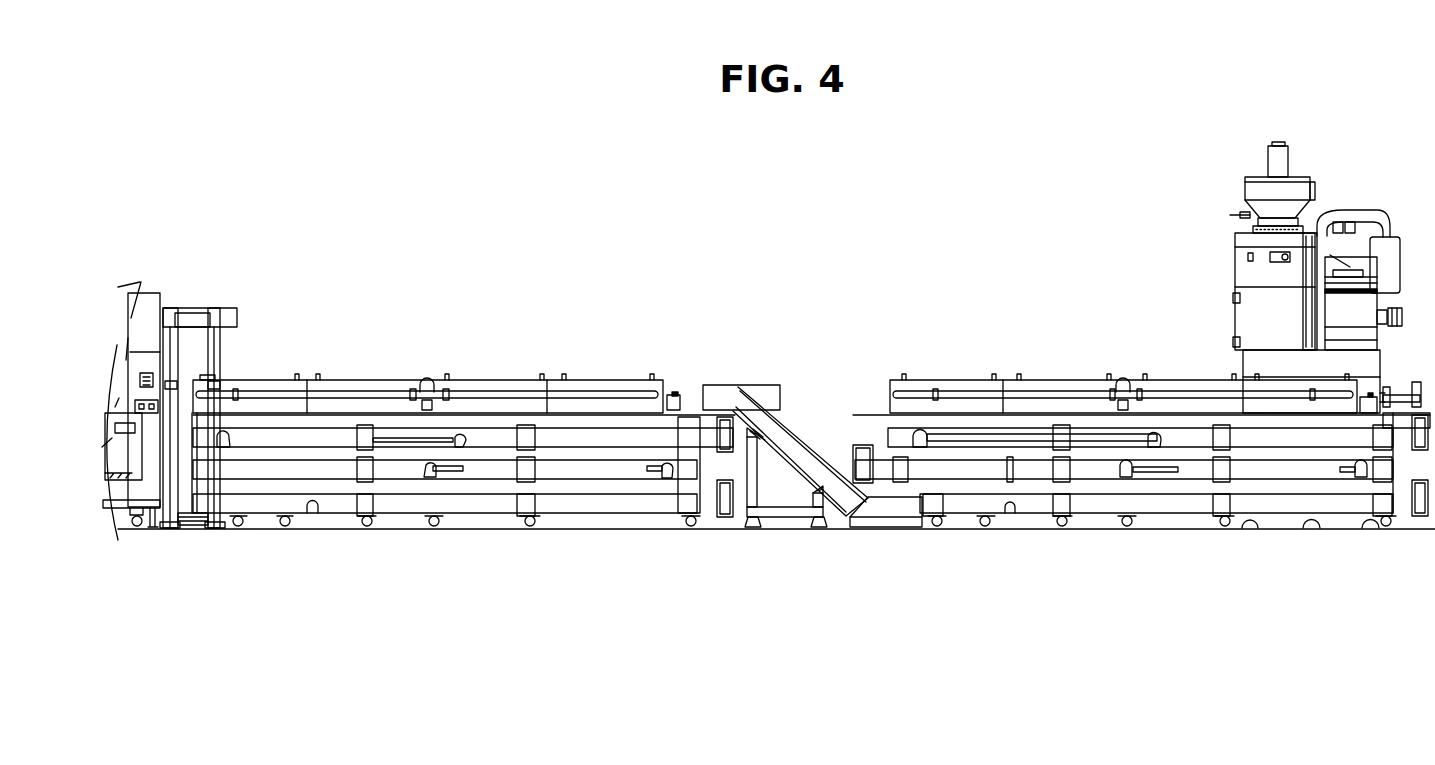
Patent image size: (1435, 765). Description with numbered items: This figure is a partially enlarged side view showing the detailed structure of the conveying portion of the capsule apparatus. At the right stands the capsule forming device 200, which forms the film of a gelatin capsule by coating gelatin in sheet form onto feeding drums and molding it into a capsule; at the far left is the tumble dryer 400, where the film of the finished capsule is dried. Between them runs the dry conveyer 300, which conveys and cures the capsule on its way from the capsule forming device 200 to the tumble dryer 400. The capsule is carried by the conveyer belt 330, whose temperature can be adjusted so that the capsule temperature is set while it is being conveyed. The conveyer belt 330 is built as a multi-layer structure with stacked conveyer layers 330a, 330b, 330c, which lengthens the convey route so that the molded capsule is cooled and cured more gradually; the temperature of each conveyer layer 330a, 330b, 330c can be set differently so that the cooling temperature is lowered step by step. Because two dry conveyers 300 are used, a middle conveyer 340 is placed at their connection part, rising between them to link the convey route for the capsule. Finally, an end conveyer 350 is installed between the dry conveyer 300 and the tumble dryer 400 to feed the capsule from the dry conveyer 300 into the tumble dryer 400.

The capsule forming device 200 is at (1209, 239).
The dry conveyer 300 is at (795, 462).
The conveyer belt 330 is at (810, 555).
The conveyer layer 330a is at (670, 643).
The conveyer layer 330b is at (568, 456).
The conveyer layer 330c is at (668, 423).
The middle conveyer 340 is at (817, 380).
The end conveyer 350 is at (217, 348).
The tumble dryer 400 is at (140, 293).